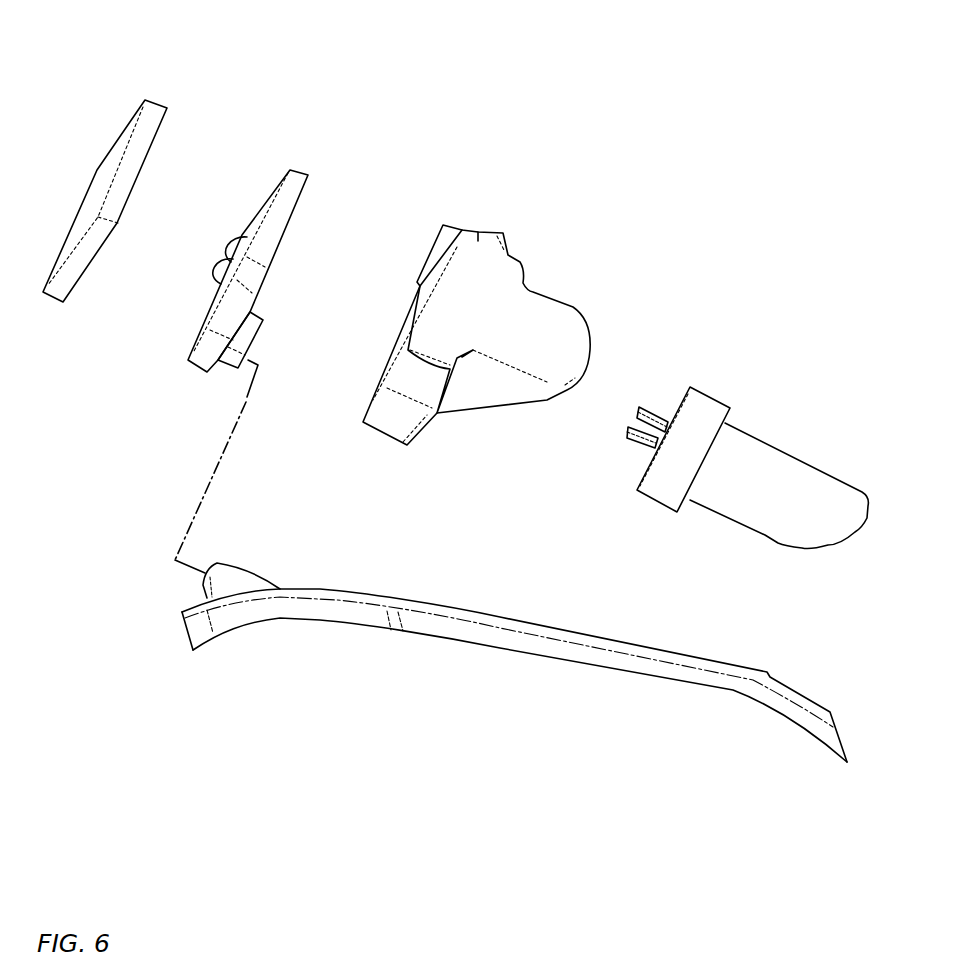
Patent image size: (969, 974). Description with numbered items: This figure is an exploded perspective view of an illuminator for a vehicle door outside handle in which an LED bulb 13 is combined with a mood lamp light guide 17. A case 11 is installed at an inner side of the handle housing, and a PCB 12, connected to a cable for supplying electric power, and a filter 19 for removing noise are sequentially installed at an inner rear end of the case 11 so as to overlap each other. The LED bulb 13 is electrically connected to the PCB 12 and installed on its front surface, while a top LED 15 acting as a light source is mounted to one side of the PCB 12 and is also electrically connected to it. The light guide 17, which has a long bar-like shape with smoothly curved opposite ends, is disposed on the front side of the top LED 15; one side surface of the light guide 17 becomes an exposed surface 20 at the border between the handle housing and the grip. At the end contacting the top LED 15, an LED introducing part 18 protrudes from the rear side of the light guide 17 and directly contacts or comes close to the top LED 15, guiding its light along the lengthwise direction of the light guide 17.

The case 11 is at (542, 328).
The PCB 12 is at (292, 183).
The LED bulb 13 is at (768, 470).
The top LED 15 is at (250, 320).
The light guide 17 is at (514, 638).
The LED introducing part 18 is at (227, 578).
The filter 19 is at (107, 170).
The exposed surface 20 is at (470, 617).